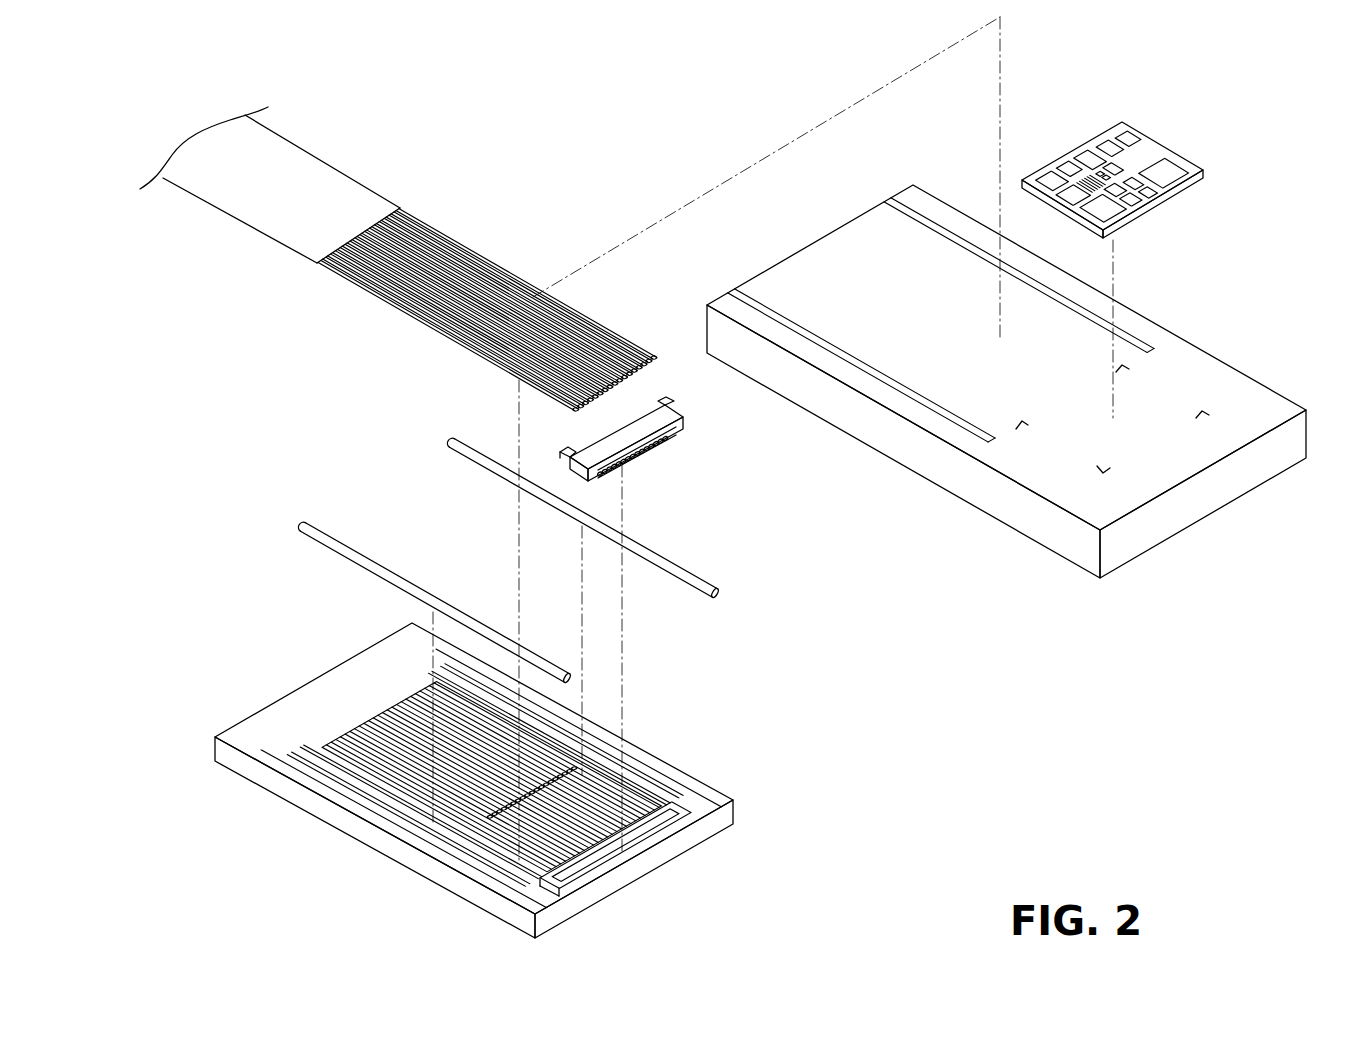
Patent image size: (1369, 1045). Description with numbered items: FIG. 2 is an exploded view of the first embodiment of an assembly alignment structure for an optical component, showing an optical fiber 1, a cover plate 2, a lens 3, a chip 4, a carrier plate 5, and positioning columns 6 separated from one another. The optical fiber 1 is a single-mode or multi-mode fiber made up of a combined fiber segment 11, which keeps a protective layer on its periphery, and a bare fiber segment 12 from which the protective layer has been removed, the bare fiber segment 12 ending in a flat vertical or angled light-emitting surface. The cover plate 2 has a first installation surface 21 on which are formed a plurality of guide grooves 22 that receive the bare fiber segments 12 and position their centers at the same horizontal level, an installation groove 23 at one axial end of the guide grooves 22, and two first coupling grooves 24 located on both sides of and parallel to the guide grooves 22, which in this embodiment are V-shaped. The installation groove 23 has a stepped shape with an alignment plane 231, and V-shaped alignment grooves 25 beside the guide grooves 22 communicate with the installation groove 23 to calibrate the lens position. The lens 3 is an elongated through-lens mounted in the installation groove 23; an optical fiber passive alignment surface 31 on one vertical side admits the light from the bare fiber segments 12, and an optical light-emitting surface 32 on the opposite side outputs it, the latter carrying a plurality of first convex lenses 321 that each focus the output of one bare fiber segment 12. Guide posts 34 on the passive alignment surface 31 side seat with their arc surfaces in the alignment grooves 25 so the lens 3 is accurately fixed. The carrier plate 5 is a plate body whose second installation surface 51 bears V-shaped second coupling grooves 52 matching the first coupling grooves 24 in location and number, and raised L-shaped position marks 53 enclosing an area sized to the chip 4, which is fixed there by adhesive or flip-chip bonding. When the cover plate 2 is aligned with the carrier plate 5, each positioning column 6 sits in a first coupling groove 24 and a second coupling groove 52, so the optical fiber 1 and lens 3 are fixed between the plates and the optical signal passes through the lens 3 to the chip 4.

The optical fiber 1 is at (399, 259).
The combined fiber segment 11 is at (347, 190).
The bare fiber segment 12 is at (488, 302).
The cover plate 2 is at (506, 769).
The first installation surface 21 is at (491, 778).
The guide grooves 22 is at (491, 777).
The installation groove 23 is at (615, 845).
The alignment plane 231 is at (615, 845).
The first coupling groove 24 is at (485, 775).
The alignment grooves 25 is at (485, 774).
The lens 3 is at (651, 425).
The optical fiber passive alignment surface 31 is at (624, 434).
The optical light-emitting surface 32 is at (688, 414).
The first convex lenses 321 is at (665, 432).
The guide posts 34 is at (670, 403).
The chip 4 is at (1117, 163).
The carrier plate 5 is at (1020, 344).
The second installation surface 51 is at (1200, 368).
The second coupling groove 52 is at (930, 228).
The position marks 53 is at (1200, 415).
The positioning column 6 is at (330, 541).